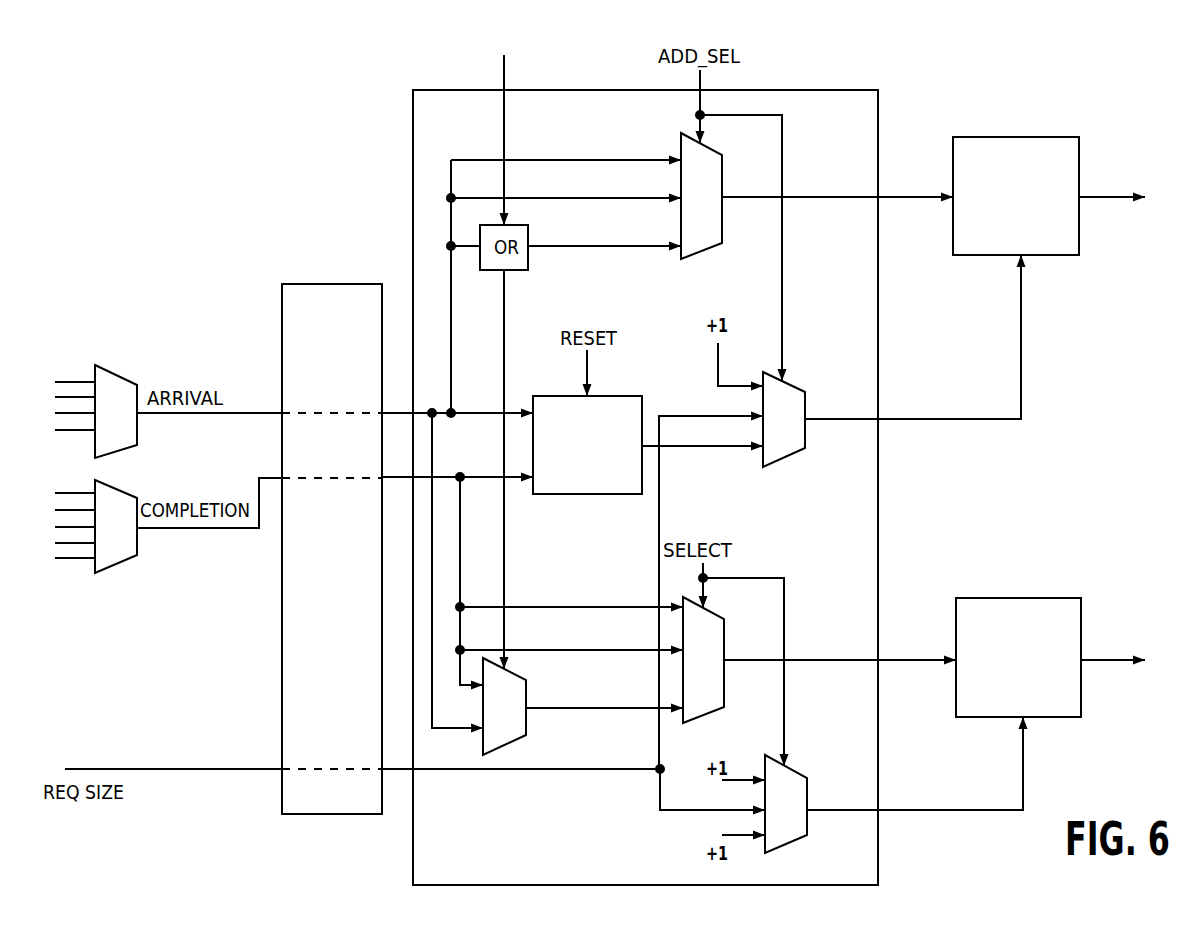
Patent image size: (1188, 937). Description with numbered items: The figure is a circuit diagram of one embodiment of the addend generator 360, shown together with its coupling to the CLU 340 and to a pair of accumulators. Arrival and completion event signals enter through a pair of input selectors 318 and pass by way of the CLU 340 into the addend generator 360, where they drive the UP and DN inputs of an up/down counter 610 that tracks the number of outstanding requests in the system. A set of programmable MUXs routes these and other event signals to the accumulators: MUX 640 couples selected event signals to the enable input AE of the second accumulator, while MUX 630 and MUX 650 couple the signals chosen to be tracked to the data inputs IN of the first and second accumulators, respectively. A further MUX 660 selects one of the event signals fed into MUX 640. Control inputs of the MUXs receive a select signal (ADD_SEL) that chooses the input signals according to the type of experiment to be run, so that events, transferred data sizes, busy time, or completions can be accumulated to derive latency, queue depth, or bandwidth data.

The input selectors 318 is at (96, 443).
The CLU 340 is at (350, 587).
The addend generator 360 is at (848, 88).
The counter 610 is at (607, 454).
The MUX 630 is at (802, 429).
The MUX 640 is at (719, 209).
The MUX 650 is at (802, 819).
The MUX 660 is at (522, 719).